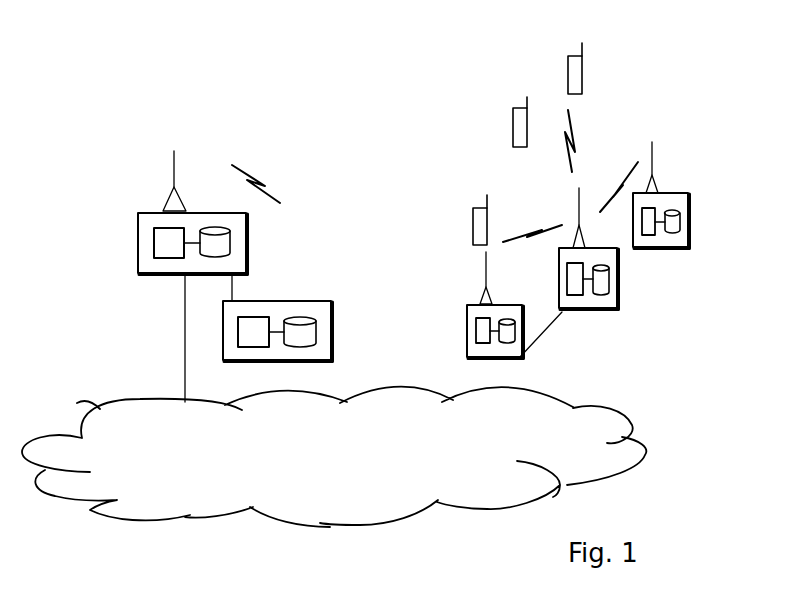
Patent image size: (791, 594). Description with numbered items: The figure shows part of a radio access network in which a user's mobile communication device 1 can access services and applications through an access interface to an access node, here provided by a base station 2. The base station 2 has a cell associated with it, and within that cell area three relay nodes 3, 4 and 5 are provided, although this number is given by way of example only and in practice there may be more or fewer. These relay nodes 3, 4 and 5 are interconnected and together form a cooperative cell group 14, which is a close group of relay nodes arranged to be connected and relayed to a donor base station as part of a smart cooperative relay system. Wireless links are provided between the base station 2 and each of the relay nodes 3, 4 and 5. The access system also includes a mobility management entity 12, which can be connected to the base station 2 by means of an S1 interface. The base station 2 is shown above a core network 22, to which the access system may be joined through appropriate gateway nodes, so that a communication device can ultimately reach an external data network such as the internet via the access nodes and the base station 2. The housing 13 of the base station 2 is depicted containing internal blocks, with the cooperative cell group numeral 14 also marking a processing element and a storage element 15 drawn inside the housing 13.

The mobile communication device 1 is at (574, 82).
The base station 2 is at (102, 167).
The relay node 3 is at (517, 332).
The relay node 4 is at (607, 302).
The relay node 5 is at (648, 237).
The mobility management entity 12 is at (313, 312).
The base station housing 13 is at (138, 214).
The cooperative cell group 14 is at (152, 249).
The memory 15 is at (200, 258).
The core network 22 is at (334, 454).